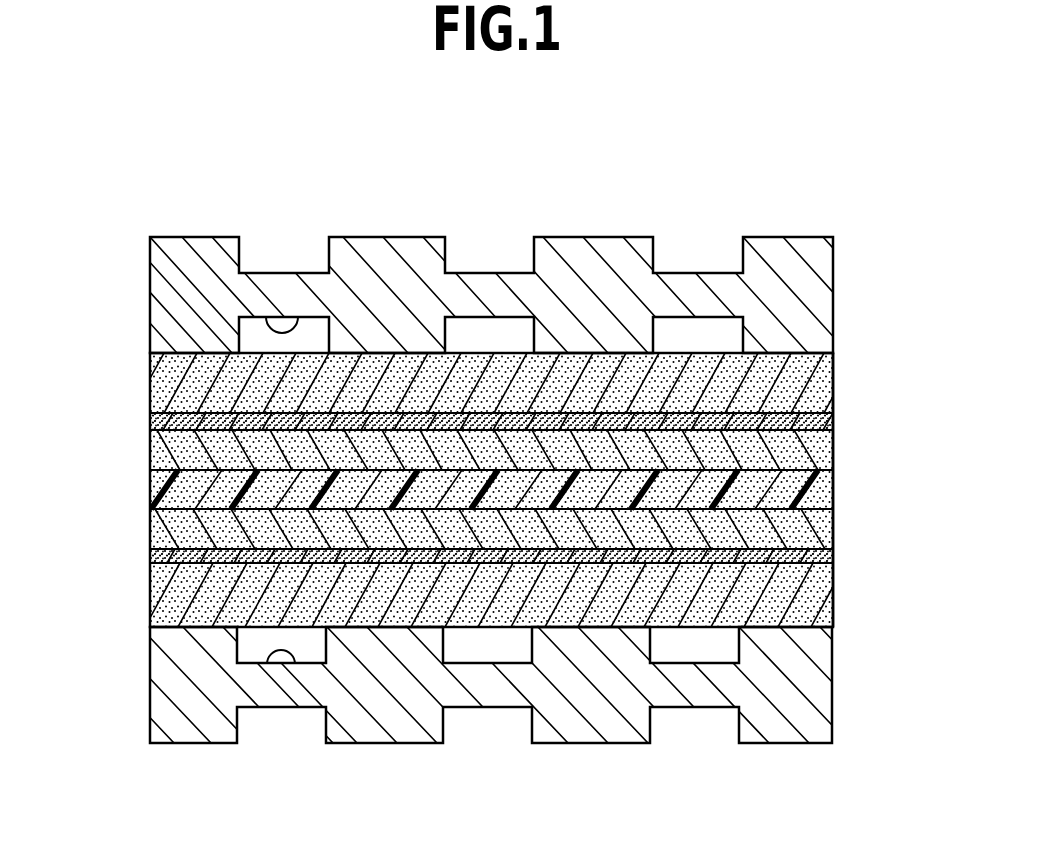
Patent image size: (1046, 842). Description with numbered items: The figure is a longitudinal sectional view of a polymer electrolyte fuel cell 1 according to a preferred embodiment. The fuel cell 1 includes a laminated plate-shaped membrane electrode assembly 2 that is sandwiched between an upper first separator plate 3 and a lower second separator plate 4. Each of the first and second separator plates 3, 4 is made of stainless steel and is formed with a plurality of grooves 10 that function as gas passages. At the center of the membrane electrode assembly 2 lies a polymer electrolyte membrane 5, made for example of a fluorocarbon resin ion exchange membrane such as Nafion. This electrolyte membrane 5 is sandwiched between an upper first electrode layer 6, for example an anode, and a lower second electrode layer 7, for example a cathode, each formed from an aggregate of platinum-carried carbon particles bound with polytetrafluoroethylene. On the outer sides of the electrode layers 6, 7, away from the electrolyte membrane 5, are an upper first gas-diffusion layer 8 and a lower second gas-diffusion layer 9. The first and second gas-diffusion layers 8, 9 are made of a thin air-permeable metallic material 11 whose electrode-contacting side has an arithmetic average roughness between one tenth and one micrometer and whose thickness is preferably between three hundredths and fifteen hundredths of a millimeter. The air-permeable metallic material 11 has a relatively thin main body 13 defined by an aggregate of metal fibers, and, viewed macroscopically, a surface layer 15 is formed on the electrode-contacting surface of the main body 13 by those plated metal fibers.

The polymer electrolyte fuel cell 1 is at (699, 211).
The membrane electrode assembly 2 is at (93, 372).
The first separator plate 3 is at (172, 285).
The second separator plate 4 is at (170, 670).
The polymer electrolyte membrane 5 is at (150, 492).
The first electrode layer 6 is at (150, 447).
The second electrode layer 7 is at (150, 528).
The first gas-diffusion layer 8 is at (140, 353).
The second gas-diffusion layer 9 is at (140, 550).
The grooves 10 is at (298, 317).
The air-permeable metallic material 11 is at (847, 388).
The main body 13 is at (783, 370).
The surface layer 15 is at (833, 419).